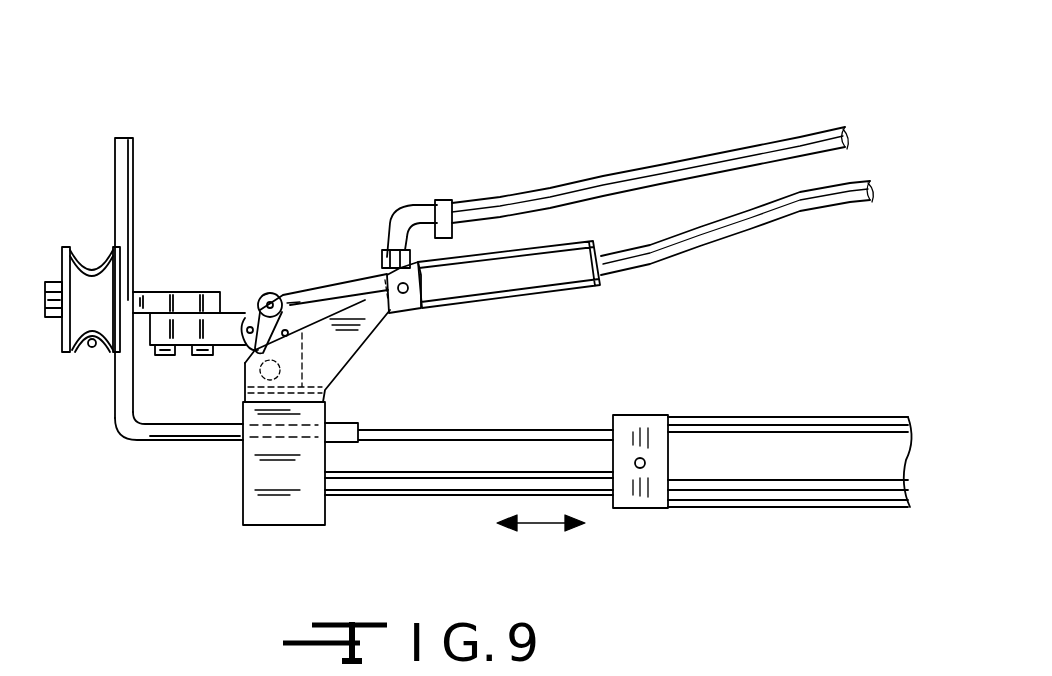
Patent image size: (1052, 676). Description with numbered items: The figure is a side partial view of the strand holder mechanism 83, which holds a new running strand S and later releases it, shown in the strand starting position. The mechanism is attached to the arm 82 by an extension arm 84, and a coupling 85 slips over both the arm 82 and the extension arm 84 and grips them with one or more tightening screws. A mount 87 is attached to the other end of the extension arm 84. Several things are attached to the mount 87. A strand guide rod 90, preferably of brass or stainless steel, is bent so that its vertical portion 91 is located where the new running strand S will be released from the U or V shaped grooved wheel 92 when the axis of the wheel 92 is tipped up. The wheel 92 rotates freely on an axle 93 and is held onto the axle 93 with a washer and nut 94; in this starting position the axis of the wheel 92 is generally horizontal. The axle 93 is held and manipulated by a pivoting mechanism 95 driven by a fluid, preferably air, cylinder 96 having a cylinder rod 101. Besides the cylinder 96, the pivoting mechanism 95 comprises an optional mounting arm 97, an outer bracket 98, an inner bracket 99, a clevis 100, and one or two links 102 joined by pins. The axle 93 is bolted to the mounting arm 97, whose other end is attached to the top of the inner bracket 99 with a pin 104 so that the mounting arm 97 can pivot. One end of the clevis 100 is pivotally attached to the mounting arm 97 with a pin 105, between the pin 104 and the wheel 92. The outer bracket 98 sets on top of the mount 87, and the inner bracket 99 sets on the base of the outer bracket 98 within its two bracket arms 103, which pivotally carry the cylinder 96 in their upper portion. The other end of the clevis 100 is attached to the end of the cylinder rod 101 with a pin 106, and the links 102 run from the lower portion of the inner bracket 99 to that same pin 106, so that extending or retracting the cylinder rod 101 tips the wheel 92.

The arm 82 is at (750, 480).
The strand holder mechanism 83 is at (361, 124).
The extension arm 84 is at (395, 477).
The coupling 85 is at (634, 421).
The mount 87 is at (262, 510).
The strand guide rod 90 is at (123, 430).
The vertical portion 91 is at (137, 162).
The grooved wheel 92 is at (63, 315).
The axle 93 is at (152, 300).
The washer and nut 94 is at (52, 280).
The pivoting mechanism 95 is at (310, 229).
The fluid cylinder 96 is at (547, 297).
The mounting arm 97 is at (187, 340).
The outer bracket 98 is at (343, 345).
The inner bracket 99 is at (330, 391).
The clevis 100 is at (248, 238).
The cylinder rod 101 is at (330, 285).
The links 102 is at (292, 300).
The bracket arms 103 is at (367, 325).
The pin 104 is at (383, 228).
The pin 105 is at (245, 320).
The pin 106 is at (265, 296).
The new running strand S is at (88, 350).